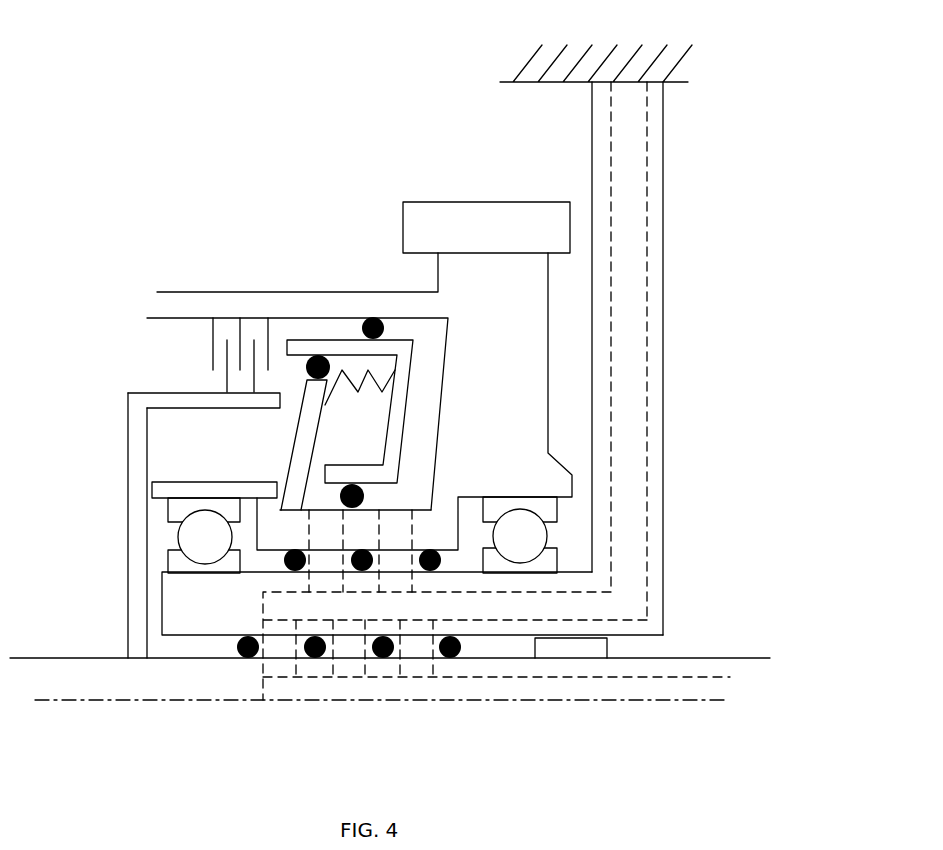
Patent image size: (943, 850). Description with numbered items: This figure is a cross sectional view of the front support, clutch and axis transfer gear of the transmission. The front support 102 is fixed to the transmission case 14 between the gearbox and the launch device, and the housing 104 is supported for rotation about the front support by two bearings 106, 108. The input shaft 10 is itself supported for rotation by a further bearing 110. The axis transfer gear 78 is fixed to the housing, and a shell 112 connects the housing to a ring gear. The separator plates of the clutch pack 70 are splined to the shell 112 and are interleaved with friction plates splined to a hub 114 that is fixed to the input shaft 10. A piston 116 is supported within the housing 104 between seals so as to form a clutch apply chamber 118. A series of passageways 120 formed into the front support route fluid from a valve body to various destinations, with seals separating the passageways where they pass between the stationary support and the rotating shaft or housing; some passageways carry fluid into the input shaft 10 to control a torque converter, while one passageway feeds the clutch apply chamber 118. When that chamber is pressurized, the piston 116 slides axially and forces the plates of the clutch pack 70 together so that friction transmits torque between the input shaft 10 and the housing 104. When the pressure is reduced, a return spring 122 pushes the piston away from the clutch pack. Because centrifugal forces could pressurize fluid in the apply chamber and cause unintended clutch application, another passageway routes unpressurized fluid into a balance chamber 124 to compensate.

The input shaft 10 is at (216, 693).
The transmission case 14 is at (523, 65).
The clutch pack 70 is at (212, 357).
The axis transfer gear 78 is at (500, 240).
The front support 102 is at (592, 147).
The housing 104 is at (518, 423).
The bearing 106 is at (203, 542).
The bearing 108 is at (515, 537).
The bearing 110 is at (597, 645).
The shell 112 is at (190, 292).
The hub 114 is at (130, 463).
The piston 116 is at (408, 405).
The clutch apply chamber 118 is at (435, 346).
The passageways 120 is at (628, 328).
The return spring 122 is at (362, 390).
The balance chamber 124 is at (353, 448).